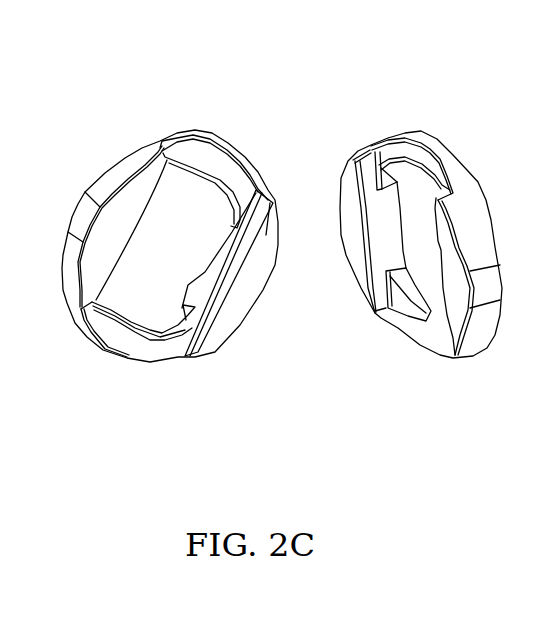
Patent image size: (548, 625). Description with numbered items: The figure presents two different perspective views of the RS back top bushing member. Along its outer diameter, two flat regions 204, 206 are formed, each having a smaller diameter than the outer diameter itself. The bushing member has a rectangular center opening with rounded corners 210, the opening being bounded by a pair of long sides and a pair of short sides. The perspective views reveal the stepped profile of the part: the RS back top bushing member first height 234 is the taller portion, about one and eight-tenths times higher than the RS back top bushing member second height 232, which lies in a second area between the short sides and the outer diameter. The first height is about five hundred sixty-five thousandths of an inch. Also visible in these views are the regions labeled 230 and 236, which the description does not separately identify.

The flat region 204 is at (80, 210).
The flat region 206 is at (253, 300).
The rounded corners 210 is at (148, 329).
The inner face 230 is at (128, 205).
The RS back top bushing member second height 232 is at (195, 150).
The RS back top bushing member first height 234 is at (258, 187).
The bottom band portion 236 is at (99, 332).